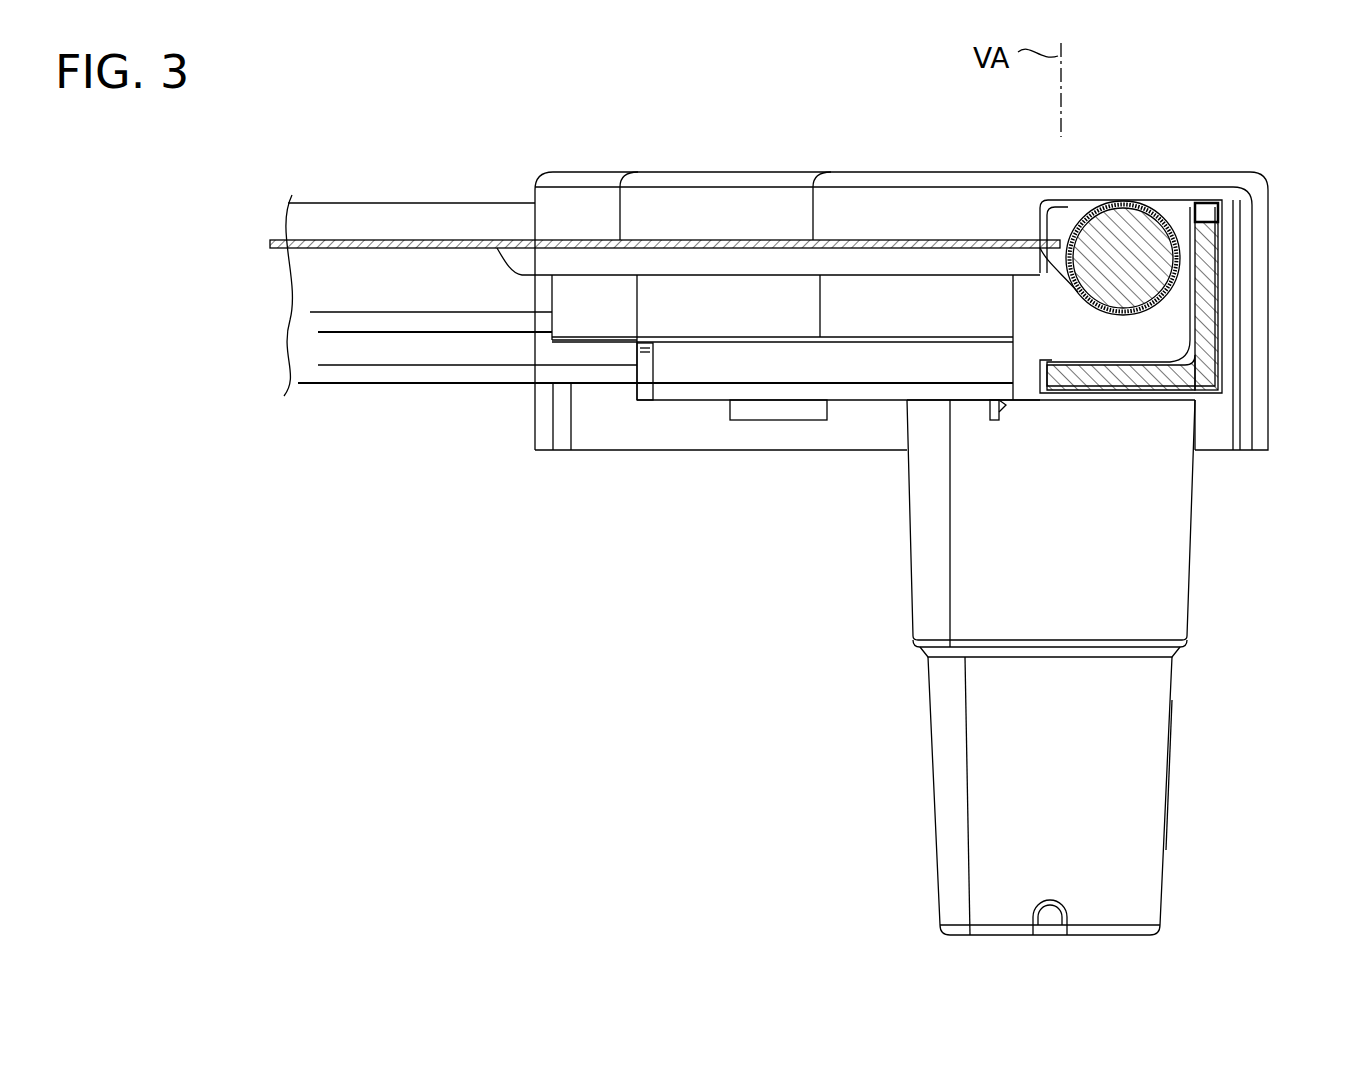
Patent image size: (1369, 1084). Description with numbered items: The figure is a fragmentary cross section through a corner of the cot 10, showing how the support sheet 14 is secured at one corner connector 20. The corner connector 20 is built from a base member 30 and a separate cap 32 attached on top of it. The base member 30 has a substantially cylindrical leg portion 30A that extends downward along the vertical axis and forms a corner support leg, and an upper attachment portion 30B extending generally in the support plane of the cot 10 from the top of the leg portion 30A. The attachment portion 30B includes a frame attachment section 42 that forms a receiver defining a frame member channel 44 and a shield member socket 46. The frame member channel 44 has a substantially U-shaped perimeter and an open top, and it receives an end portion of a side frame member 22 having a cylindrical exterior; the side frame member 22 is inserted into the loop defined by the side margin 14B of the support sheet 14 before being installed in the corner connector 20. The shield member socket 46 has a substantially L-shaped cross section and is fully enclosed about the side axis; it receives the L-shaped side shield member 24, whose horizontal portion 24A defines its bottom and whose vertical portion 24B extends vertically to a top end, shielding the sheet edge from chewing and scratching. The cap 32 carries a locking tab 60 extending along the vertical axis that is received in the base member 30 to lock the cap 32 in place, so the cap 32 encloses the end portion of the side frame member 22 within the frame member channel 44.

The cot 10 is at (270, 768).
The support sheet 14 is at (343, 240).
The side margin 14B is at (1127, 212).
The corner connector 20 is at (928, 933).
The side frame member 22 is at (1108, 222).
The side shield member 24 is at (1218, 240).
The horizontal portion 24A is at (1079, 386).
The vertical portion 24B is at (1210, 290).
The base member 30 is at (1140, 912).
The leg portion 30A is at (1164, 786).
The upper attachment portion 30B is at (672, 402).
The cap 32 is at (568, 176).
The frame attachment section 42 is at (1136, 402).
The frame member channel 44 is at (1073, 210).
The shield member socket 46 is at (1222, 360).
The locking tab 60 is at (758, 412).